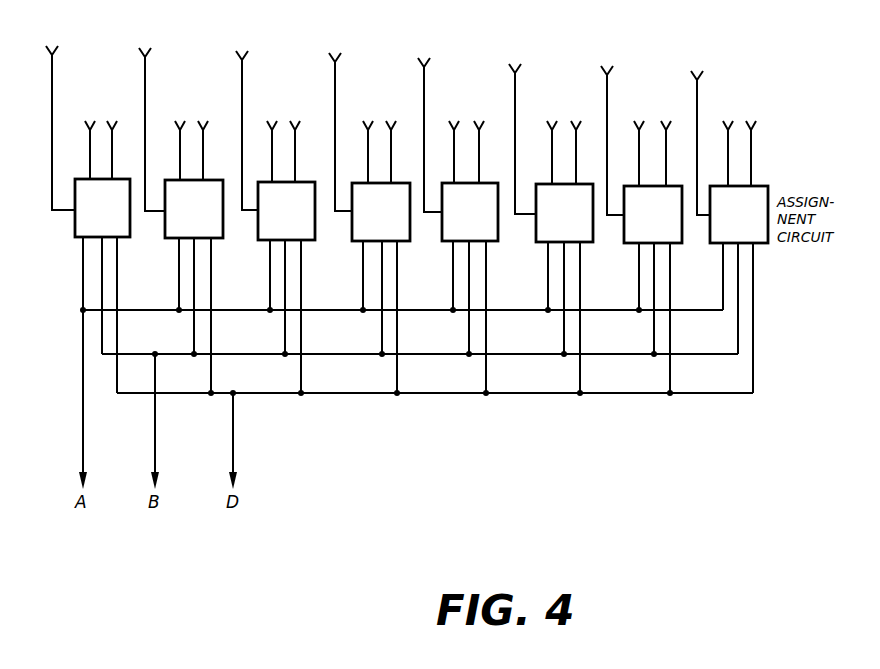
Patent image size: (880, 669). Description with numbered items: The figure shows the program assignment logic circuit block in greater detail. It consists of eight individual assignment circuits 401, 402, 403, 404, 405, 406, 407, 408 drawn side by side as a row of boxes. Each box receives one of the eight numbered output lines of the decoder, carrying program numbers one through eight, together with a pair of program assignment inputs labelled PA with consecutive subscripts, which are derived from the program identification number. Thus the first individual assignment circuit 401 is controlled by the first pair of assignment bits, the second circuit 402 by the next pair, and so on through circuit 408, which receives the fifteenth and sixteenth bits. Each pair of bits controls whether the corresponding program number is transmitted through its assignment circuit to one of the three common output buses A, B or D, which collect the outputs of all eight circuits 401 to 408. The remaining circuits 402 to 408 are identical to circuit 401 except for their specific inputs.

The individual assignment circuit 401 is at (82, 222).
The individual assignment circuit 402 is at (180, 224).
The individual assignment circuit 403 is at (273, 226).
The individual assignment circuit 404 is at (367, 227).
The individual assignment circuit 405 is at (457, 227).
The individual assignment circuit 406 is at (551, 228).
The individual assignment circuit 407 is at (639, 229).
The individual assignment circuit 408 is at (725, 229).